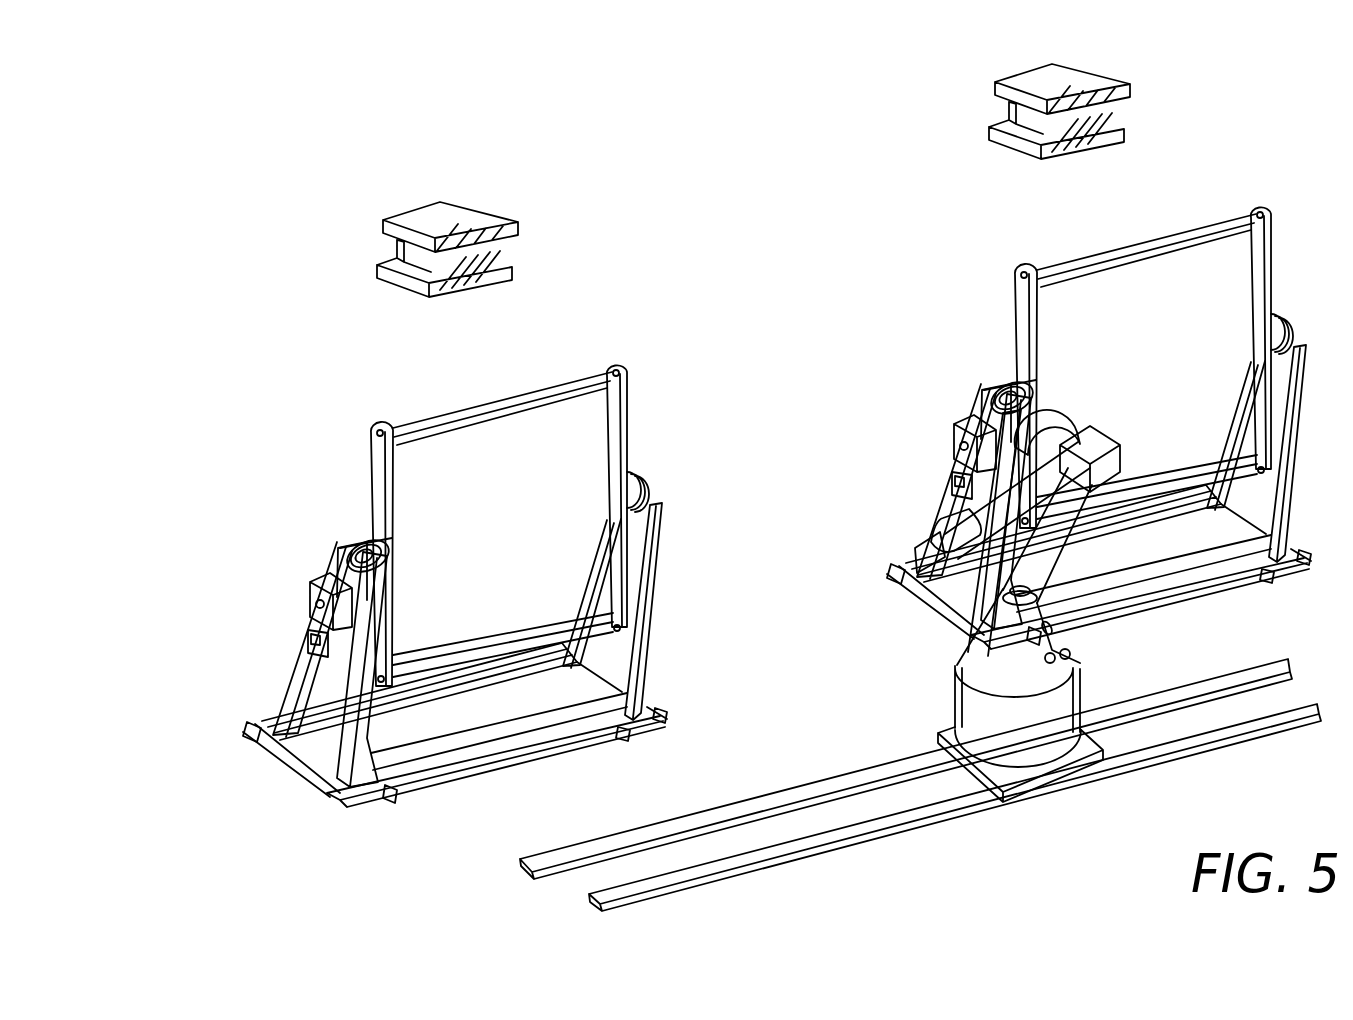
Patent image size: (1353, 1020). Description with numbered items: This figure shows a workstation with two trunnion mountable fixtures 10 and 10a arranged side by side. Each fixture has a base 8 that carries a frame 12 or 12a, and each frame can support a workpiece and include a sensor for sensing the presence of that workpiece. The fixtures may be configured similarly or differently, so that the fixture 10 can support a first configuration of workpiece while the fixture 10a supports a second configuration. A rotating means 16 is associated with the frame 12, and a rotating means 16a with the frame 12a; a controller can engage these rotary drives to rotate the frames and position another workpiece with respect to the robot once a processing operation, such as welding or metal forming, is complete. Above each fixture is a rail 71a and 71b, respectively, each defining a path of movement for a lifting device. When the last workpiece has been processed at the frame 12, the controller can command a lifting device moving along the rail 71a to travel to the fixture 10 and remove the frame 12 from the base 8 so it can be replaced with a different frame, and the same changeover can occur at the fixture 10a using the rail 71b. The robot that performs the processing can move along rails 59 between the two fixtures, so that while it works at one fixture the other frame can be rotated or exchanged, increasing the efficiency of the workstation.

The base 8 is at (676, 587).
The trunnion mountable fixture 10 is at (485, 542).
The frame 12 is at (573, 383).
The rotating means 16 is at (289, 603).
The rail 71a is at (479, 290).
The trunnion mountable fixture 10a is at (1088, 396).
The frame 12a is at (1148, 336).
The rotating means 16a is at (951, 425).
The rail 71b is at (1112, 126).
The rails 59 is at (1262, 664).